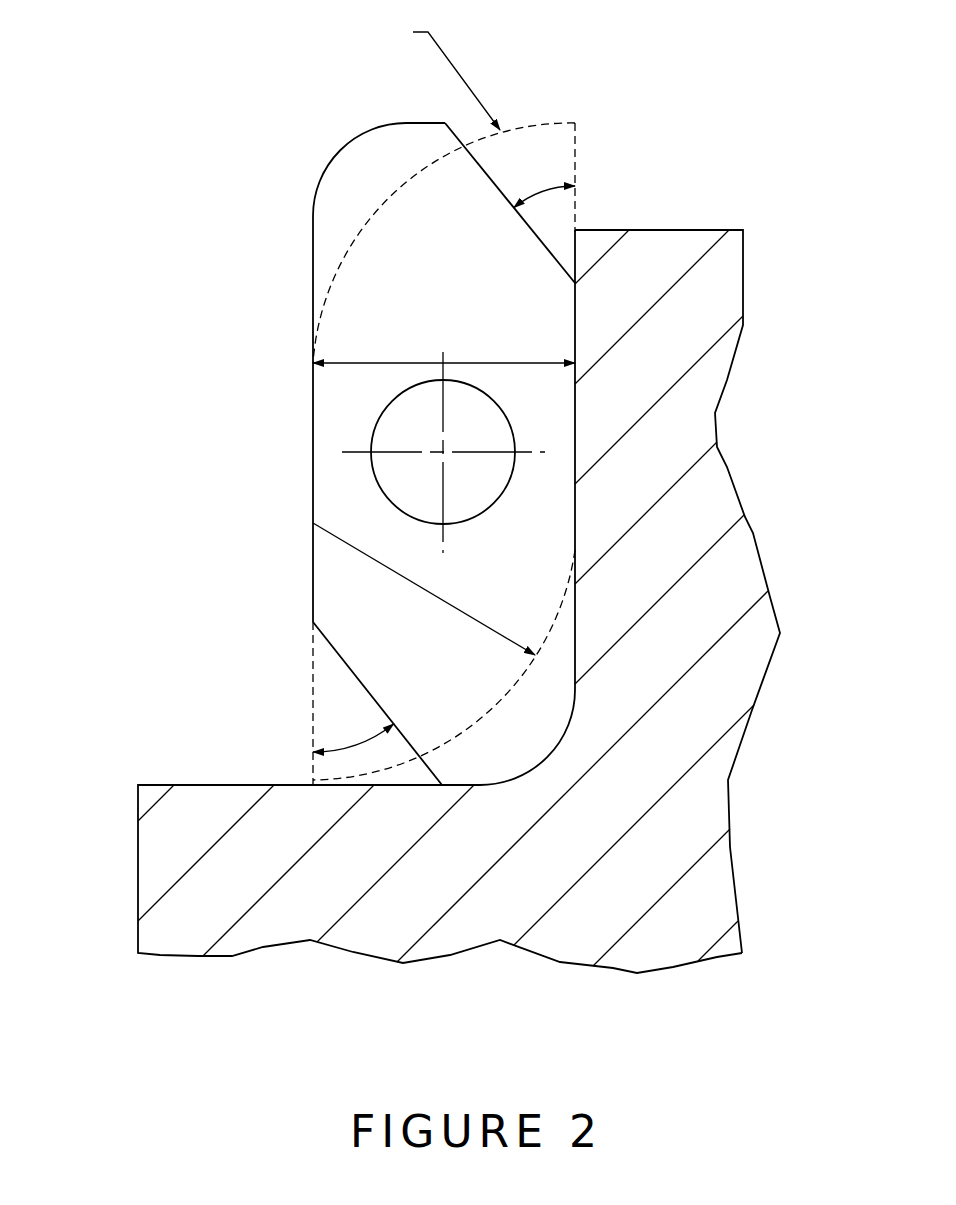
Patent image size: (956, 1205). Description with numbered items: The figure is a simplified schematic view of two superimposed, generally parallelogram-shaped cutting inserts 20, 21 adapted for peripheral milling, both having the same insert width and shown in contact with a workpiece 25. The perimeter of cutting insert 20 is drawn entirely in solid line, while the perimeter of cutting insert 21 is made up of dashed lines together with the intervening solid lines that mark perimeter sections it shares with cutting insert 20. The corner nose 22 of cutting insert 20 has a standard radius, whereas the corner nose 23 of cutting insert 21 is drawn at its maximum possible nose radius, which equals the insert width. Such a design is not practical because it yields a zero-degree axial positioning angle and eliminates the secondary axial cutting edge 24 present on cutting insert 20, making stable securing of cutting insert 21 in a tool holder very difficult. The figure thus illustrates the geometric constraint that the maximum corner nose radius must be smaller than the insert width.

The cutting insert 20 is at (339, 402).
The cutting insert 21 is at (678, 534).
The corner nose 22 is at (447, 461).
The corner nose 23 is at (444, 404).
The secondary axial cutting edge 24 is at (444, 494).
The workpiece 25 is at (408, 807).